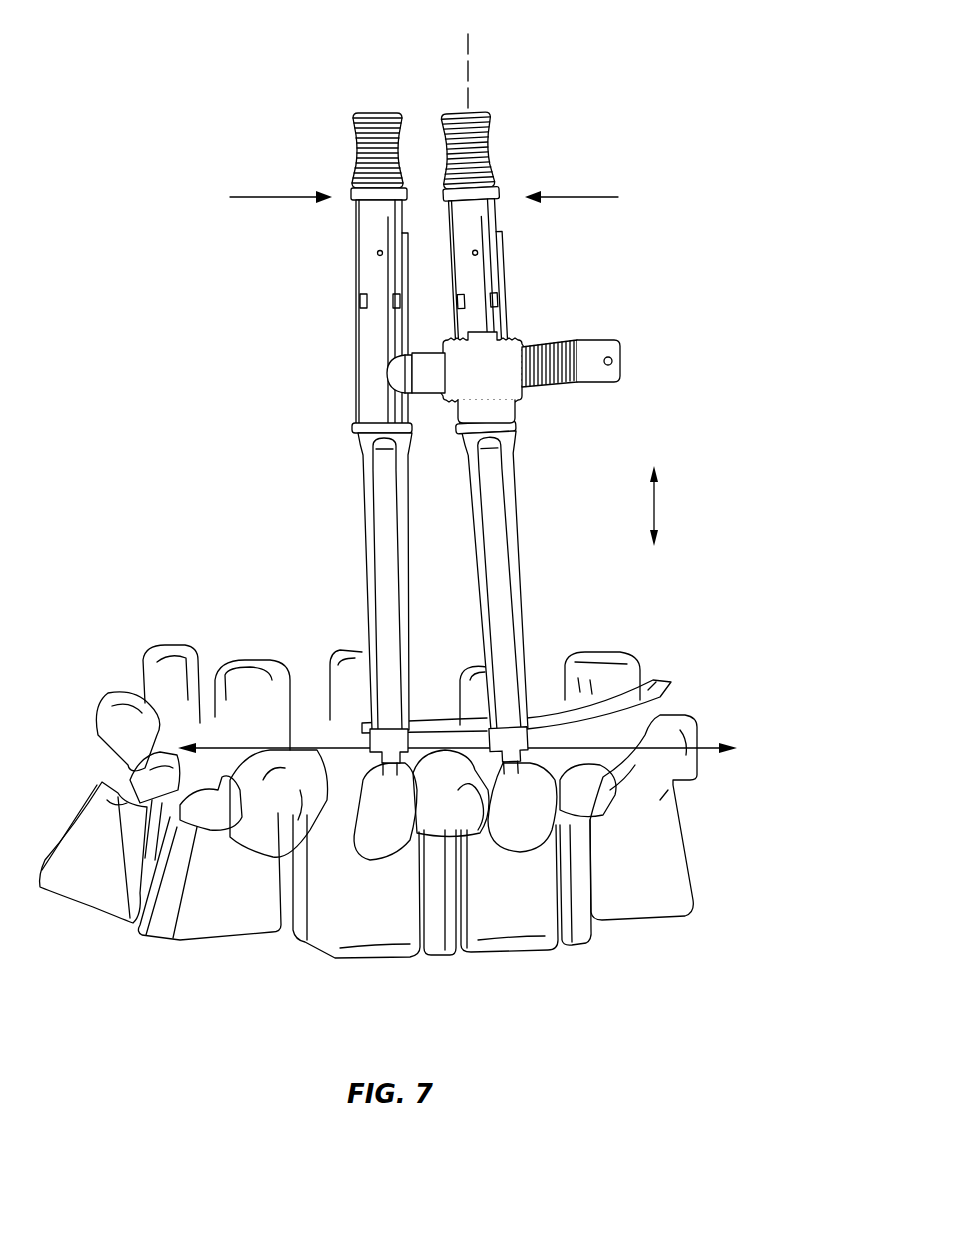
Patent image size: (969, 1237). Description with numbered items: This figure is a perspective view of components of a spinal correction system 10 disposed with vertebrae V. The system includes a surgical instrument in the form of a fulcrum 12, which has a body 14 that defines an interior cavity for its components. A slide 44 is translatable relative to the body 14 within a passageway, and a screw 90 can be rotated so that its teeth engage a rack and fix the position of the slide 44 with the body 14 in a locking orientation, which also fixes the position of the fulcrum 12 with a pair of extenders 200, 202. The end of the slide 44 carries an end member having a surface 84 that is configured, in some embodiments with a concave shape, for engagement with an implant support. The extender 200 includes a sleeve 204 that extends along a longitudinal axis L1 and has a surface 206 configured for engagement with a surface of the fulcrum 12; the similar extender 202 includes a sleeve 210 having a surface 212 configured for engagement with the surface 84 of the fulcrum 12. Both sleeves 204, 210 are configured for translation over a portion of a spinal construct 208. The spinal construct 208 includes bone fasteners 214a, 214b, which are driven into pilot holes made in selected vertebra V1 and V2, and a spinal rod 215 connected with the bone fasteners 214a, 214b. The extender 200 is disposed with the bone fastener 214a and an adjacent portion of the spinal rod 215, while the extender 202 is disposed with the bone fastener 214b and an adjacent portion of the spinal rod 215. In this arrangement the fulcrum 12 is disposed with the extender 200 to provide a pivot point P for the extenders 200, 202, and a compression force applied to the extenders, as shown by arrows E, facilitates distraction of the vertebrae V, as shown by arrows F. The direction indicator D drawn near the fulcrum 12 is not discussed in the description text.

The spinal correction system 10 is at (171, 357).
The fulcrum 12 is at (624, 315).
The body 14 is at (488, 367).
The slide 44 is at (578, 384).
The surface 84 is at (403, 350).
The screw 90 is at (518, 398).
The extender 200 is at (603, 160).
The extender 202 is at (296, 258).
The sleeve 204 is at (482, 198).
The surface 206 is at (507, 273).
The spinal construct 208 is at (530, 733).
The sleeve 210 is at (370, 237).
The surface 212 is at (370, 323).
The bone fastener 214a is at (520, 753).
The bone fastener 214b is at (383, 742).
The spinal rod 215 is at (632, 698).
The vertebrae V is at (507, 995).
The vertebra V1 is at (510, 932).
The vertebra V2 is at (381, 942).
The pivot point P is at (428, 375).
The direction D is at (663, 506).
The arrows E is at (421, 198).
The arrows F is at (463, 742).
The longitudinal axis L1 is at (466, 56).